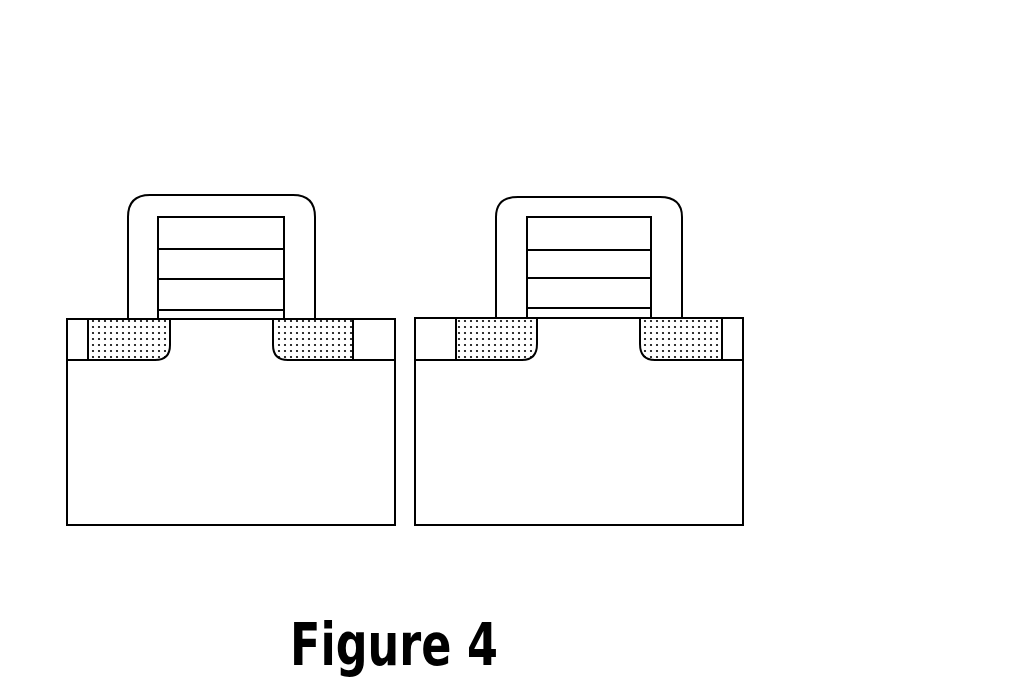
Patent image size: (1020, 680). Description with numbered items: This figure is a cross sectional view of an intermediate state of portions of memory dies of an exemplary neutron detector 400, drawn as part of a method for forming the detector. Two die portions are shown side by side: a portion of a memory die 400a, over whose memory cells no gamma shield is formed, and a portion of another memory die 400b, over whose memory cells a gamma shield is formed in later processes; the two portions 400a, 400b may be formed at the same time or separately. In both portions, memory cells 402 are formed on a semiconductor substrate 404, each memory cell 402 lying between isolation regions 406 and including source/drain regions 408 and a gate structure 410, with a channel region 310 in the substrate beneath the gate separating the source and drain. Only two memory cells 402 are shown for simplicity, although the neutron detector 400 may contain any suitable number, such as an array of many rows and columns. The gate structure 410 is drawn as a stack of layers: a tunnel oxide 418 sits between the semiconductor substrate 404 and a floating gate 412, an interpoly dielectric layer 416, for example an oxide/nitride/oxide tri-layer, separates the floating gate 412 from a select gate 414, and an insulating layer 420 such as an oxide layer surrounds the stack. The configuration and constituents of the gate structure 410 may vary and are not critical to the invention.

The neutron detector 400 is at (428, 40).
The portion of a memory die 400a is at (222, 50).
The portion of another memory die 400b is at (593, 50).
The memory cells 402 is at (290, 115).
The semiconductor substrate 404 is at (743, 482).
The isolation regions 406 is at (743, 337).
The source/drain regions 408 is at (162, 355).
The gate structure 410 is at (232, 172).
The floating gate 412 is at (652, 295).
The select gate 414 is at (652, 233).
The interpoly dielectric layer 416 is at (652, 265).
The tunnel oxide 418 is at (652, 315).
The insulating layer 420 is at (670, 195).
The channel region 310 is at (220, 373).